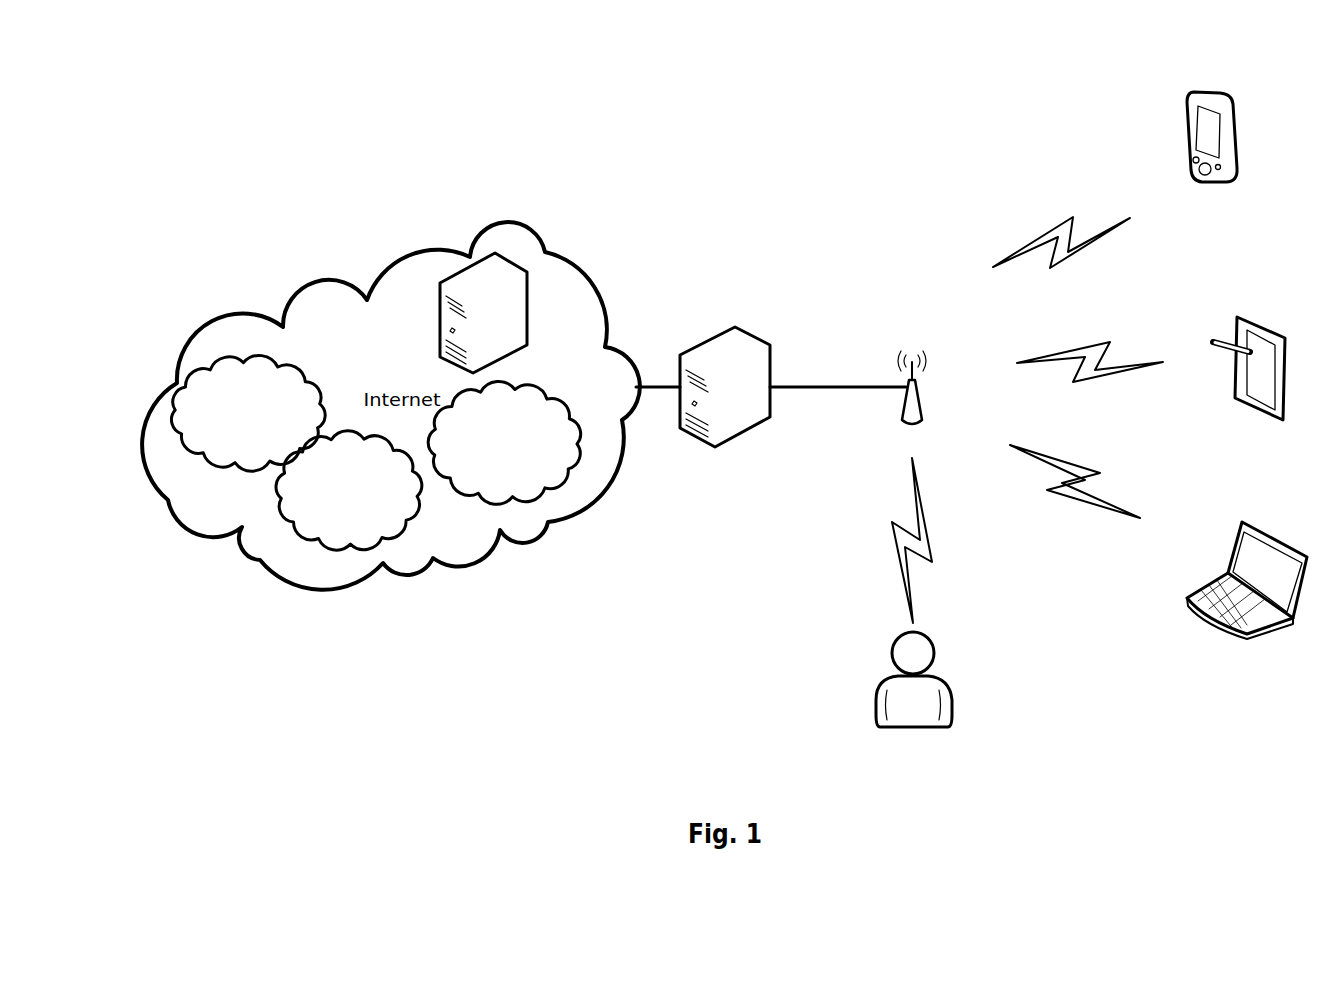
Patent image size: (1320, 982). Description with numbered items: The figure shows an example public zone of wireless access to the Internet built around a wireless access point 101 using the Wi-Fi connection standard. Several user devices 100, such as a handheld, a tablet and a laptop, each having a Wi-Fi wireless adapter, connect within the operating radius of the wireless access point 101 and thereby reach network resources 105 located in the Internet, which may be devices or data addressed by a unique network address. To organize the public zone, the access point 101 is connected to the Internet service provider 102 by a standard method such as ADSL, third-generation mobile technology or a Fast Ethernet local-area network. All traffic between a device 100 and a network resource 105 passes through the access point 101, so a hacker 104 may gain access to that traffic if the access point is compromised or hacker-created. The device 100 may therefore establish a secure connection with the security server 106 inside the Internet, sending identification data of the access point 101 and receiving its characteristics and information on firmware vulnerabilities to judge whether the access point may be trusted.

The device 100 is at (1187, 113).
The wireless access point 101 is at (912, 356).
The Internet service provider 102 is at (715, 335).
The hacker 104 is at (885, 672).
The network resource 105 is at (288, 355).
The security server 106 is at (463, 270).